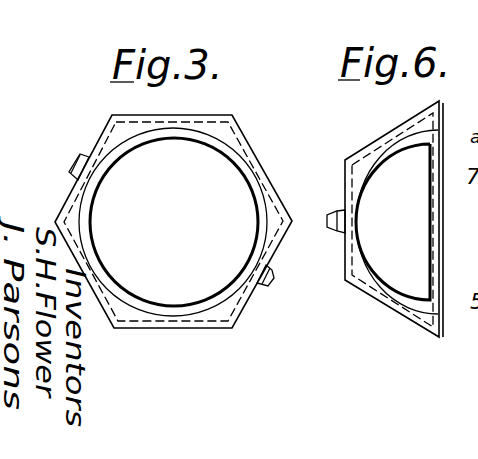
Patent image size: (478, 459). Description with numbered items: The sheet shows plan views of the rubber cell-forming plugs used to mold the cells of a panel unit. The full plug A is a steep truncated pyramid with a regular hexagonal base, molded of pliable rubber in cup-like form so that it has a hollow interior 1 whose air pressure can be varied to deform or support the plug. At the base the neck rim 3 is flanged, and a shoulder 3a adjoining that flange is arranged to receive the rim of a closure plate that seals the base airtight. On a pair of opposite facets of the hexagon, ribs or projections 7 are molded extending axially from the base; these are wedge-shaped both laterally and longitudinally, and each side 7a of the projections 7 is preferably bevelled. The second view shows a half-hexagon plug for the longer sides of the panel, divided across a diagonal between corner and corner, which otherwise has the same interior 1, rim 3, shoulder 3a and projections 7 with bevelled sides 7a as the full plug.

In FIG. 3, the hollow interior 1 is at (181, 229).
In FIG. 6, the hollow interior 1 is at (402, 235).
In FIG. 3, the rim 3 is at (91, 235).
In FIG. 6, the rim 3 is at (376, 176).
In FIG. 3, the shoulder 3a is at (220, 133).
In FIG. 6, the shoulder 3a is at (361, 272).
In FIG. 3, the ribs or projections 7 is at (74, 151).
In FIG. 6, the ribs or projections 7 is at (327, 225).
In FIG. 3, the side of the projection 7a is at (69, 171).
In FIG. 6, the side of the projection 7a is at (335, 213).
In FIG. 3, the plug A is at (262, 297).
In FIG. 6, the plug A is at (446, 110).